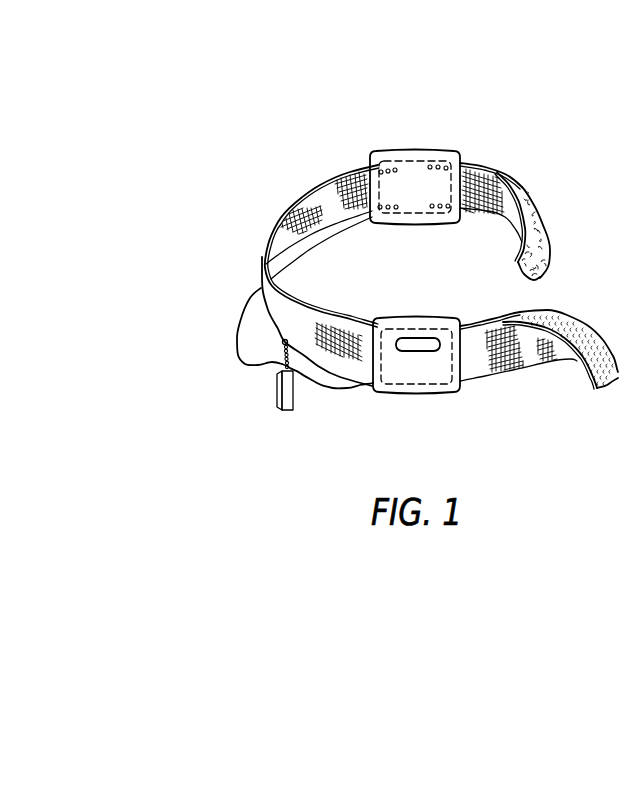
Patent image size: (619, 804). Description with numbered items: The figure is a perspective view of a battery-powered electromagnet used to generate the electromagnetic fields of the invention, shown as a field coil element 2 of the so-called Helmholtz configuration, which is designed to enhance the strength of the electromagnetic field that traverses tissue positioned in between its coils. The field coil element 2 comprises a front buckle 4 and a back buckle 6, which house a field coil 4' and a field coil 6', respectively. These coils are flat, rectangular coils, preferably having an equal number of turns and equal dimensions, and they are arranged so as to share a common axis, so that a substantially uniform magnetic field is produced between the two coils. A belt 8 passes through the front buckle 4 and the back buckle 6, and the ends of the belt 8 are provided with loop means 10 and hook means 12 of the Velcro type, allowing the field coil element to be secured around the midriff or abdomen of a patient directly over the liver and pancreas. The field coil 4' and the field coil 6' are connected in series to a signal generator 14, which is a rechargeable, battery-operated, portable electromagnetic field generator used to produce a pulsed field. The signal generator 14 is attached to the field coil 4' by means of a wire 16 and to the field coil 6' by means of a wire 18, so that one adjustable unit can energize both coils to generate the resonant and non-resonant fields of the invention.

The field coil element 2 is at (308, 148).
The front buckle 4 is at (420, 380).
The field coil 4' is at (450, 379).
The back buckle 6 is at (415, 160).
The field coil 6' is at (414, 155).
The belt 8 is at (278, 218).
The loop means 10 is at (536, 214).
The hook means 12 is at (587, 342).
The signal generator 14 is at (288, 412).
The wire 16 is at (340, 393).
The wire 18 is at (238, 323).